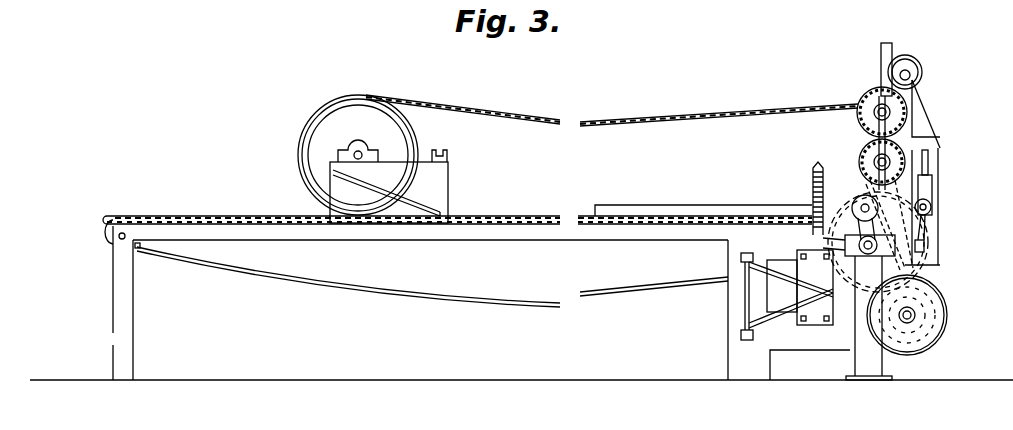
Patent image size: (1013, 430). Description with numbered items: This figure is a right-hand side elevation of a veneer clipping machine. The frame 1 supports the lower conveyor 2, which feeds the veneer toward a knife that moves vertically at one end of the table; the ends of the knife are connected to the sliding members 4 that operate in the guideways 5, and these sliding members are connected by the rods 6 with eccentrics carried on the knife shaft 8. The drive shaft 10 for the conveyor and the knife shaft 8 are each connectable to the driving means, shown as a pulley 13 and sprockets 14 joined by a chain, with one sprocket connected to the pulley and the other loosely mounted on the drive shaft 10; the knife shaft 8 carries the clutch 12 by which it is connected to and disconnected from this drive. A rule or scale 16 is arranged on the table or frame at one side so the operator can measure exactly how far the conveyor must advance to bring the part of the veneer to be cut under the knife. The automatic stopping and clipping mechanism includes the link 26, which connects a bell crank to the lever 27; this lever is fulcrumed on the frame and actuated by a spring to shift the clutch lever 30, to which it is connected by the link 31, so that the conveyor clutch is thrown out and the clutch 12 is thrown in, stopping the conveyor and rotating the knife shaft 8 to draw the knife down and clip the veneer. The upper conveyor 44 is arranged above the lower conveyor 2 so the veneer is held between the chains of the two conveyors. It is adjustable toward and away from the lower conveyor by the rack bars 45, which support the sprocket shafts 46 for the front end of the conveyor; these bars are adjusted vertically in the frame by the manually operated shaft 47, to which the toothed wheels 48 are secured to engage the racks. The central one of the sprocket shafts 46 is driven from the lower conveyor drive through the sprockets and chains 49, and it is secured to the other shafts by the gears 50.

The frame 1 is at (928, 374).
The lower conveyor 2 is at (230, 216).
The sliding members 4 is at (932, 192).
The guideways 5 is at (928, 163).
The rods 6 is at (926, 252).
The knife shaft 8 is at (918, 316).
The drive shaft 10 is at (915, 262).
The clutch 12 is at (925, 335).
The pulley 13 is at (915, 272).
The sprockets 14 is at (930, 290).
The rule or scale 16 is at (632, 205).
The link 26 is at (770, 303).
The lever 27 is at (770, 318).
The clutch lever 30 is at (762, 340).
The link 31 is at (832, 326).
The upper conveyor 44 is at (586, 122).
The rack bars 45 is at (892, 45).
The sprocket shafts 46 is at (868, 104).
The manually operated shaft 47 is at (912, 78).
The toothed wheels 48 is at (915, 62).
The sprockets and chains 49 is at (918, 148).
The gears 50 is at (945, 148).